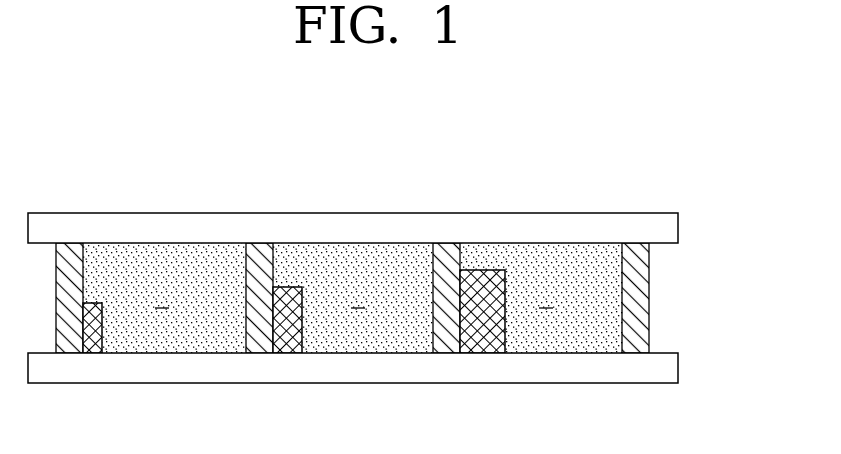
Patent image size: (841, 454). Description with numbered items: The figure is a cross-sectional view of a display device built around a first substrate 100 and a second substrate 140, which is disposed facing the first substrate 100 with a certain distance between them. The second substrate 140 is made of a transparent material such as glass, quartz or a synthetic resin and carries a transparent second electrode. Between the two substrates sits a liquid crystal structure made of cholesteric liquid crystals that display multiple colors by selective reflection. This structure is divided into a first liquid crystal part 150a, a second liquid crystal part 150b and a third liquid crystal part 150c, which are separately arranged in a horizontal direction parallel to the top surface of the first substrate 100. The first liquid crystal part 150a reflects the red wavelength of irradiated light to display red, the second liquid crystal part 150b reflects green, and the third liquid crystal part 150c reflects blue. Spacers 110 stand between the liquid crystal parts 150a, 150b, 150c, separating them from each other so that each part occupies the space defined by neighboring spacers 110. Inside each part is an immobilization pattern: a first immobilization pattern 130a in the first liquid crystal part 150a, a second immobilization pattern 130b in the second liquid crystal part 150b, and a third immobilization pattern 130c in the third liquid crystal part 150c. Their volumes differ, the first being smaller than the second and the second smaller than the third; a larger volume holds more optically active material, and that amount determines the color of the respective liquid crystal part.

The first substrate 100 is at (665, 369).
The spacers 110 is at (635, 297).
The first immobilization pattern 130a is at (92, 343).
The second immobilization pattern 130b is at (290, 343).
The third immobilization pattern 130c is at (483, 343).
The second substrate 140 is at (665, 229).
The first liquid crystal part 150a is at (162, 260).
The second liquid crystal part 150b is at (357, 260).
The third liquid crystal part 150c is at (540, 260).